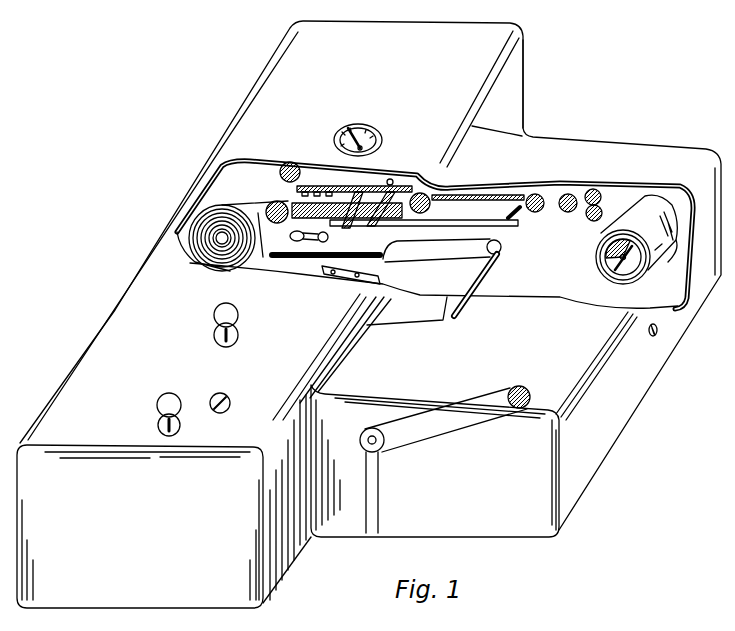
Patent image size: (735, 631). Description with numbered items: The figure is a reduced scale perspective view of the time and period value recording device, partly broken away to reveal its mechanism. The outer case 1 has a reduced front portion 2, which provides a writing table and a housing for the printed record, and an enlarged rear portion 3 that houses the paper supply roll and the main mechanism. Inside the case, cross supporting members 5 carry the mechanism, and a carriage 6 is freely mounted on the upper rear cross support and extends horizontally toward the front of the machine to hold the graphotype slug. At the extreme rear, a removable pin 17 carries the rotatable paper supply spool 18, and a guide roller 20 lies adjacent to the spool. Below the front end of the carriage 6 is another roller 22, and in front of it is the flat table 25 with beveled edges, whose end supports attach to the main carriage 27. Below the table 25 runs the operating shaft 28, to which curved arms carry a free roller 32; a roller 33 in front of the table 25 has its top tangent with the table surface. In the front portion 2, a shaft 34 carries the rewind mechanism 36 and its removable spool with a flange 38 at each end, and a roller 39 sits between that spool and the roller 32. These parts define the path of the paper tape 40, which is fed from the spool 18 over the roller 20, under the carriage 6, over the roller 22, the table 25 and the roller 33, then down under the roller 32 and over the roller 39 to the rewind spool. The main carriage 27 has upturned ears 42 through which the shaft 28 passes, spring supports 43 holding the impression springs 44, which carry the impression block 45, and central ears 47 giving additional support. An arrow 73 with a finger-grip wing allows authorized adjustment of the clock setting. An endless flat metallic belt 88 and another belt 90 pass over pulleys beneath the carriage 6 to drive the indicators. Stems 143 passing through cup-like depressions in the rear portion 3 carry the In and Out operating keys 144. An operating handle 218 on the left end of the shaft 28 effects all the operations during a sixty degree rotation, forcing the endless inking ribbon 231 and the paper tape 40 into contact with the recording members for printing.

The outer case 1 is at (497, 105).
The reduced front portion 2 is at (606, 366).
The enlarged rear portion 3 is at (256, 117).
The cross supporting member 5 is at (287, 167).
The carriage 6 is at (354, 182).
The removable pin 17 is at (224, 246).
The paper supply spool 18 is at (206, 246).
The guide roller 20 is at (268, 243).
The roller 22 is at (425, 197).
The table 25 is at (507, 197).
The main carriage 27 is at (295, 276).
The operating shaft 28 is at (477, 283).
The roller 32 is at (594, 189).
The roller 33 is at (537, 213).
The shaft 34 is at (640, 273).
The rewind mechanism 36 is at (618, 265).
The flange 38 is at (665, 262).
The roller 39 is at (588, 218).
The paper tape 40 is at (640, 200).
The upturned ear 42 is at (518, 212).
The spring support 43 is at (567, 194).
The impression spring 44 is at (477, 212).
The impression block 45 is at (295, 198).
The upturned ear 47 is at (470, 248).
The arrow 73 is at (365, 132).
The endless flat metallic belt 88 is at (371, 226).
The belt 90 is at (337, 228).
The stem 143 is at (235, 327).
The operating key 144 is at (183, 400).
The operating handle 218 is at (435, 428).
The inking ribbon 231 is at (392, 253).